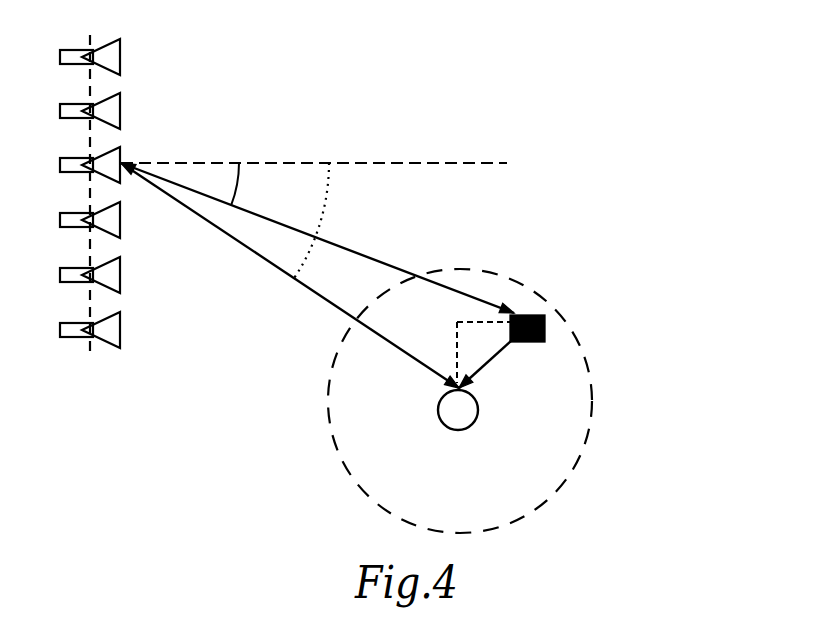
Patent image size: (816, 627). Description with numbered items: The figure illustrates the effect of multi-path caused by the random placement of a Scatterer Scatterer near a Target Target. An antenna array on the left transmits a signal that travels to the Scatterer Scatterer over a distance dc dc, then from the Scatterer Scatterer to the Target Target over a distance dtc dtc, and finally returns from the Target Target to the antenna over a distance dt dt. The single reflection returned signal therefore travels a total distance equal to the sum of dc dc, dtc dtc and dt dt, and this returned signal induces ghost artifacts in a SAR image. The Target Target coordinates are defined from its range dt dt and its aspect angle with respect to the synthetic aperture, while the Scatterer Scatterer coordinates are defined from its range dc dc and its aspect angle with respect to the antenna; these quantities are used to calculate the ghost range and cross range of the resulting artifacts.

The distance from antenna to scatterer dc is at (317, 238).
The distance from antenna to target dt is at (290, 275).
The distance from scatterer to target dtc is at (504, 361).
The scatterer Scatterer is at (601, 301).
The target Target is at (489, 401).